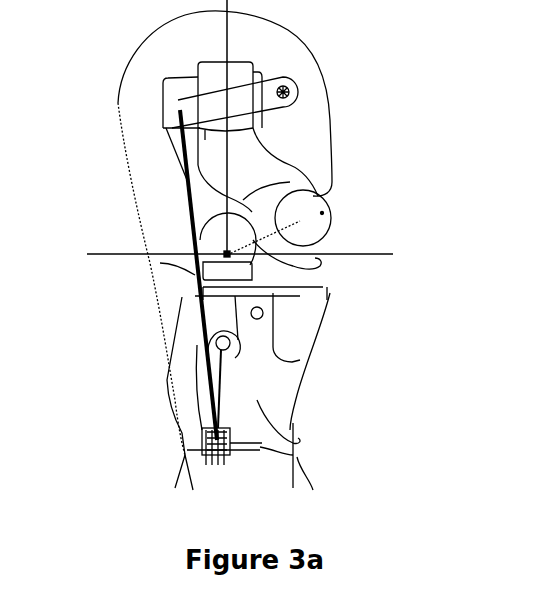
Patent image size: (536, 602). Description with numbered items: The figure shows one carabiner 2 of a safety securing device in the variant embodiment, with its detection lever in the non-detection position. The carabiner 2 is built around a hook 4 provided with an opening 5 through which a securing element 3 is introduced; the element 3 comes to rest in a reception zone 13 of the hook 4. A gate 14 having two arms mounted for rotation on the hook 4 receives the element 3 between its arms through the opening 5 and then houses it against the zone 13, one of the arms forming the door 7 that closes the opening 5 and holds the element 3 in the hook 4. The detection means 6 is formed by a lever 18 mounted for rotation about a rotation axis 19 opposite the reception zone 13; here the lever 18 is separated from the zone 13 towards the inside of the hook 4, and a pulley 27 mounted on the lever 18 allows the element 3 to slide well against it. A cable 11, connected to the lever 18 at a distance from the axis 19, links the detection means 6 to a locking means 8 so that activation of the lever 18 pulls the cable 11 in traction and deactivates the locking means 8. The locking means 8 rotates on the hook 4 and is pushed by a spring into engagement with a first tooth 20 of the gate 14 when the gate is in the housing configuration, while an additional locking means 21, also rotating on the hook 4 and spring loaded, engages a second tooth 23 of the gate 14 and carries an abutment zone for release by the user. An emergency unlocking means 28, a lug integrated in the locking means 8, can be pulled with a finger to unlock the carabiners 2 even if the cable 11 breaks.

The carabiner 2 is at (305, 27).
The securing element 3 is at (324, 213).
The hook 4 is at (305, 56).
The opening 5 is at (335, 198).
The detection means 6 is at (156, 80).
The door 7 is at (322, 270).
The locking means 8 is at (195, 296).
The cable 11 is at (178, 158).
The reception zone 13 is at (240, 119).
The gate 14 is at (277, 199).
The lever 18 is at (185, 97).
The rotation axis 19 is at (292, 92).
The first tooth 20 is at (160, 263).
The additional locking means 21 is at (283, 428).
The second tooth 23 is at (323, 287).
The pulley 27 is at (178, 125).
The emergency unlocking means 28 is at (170, 390).